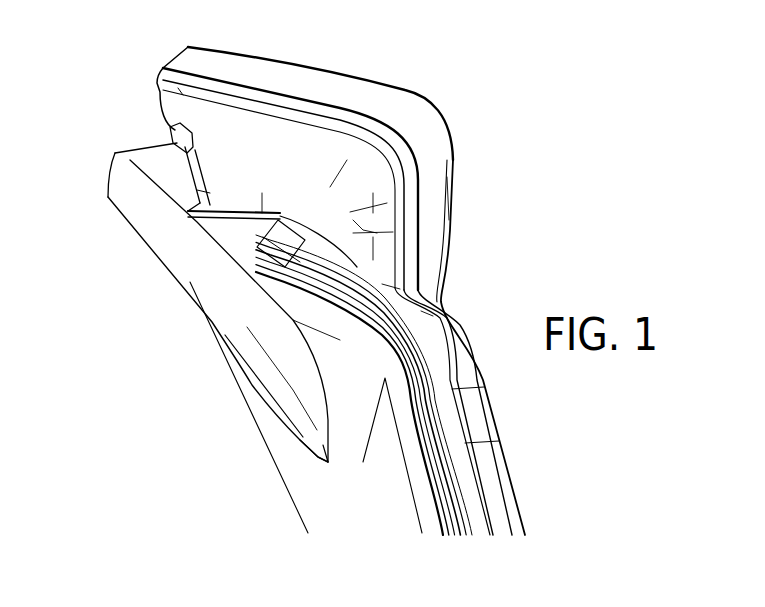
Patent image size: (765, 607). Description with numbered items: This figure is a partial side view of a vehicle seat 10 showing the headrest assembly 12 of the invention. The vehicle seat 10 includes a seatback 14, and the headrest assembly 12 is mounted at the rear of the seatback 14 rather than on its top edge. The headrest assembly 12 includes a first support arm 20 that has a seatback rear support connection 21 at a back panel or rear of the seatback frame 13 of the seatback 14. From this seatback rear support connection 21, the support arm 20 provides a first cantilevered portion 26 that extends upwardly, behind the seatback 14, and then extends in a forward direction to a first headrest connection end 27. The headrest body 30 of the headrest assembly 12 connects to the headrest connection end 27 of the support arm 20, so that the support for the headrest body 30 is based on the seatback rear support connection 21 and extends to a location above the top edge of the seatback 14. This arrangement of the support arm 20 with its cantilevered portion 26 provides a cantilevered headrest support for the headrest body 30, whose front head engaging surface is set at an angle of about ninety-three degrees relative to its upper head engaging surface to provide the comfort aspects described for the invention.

The vehicle seat 10 is at (536, 277).
The headrest assembly 12 is at (135, 46).
The seatback frame 13 is at (367, 505).
The seatback 14 is at (513, 508).
The first support arm 20 is at (197, 330).
The seatback rear support connection 21 is at (309, 454).
The first cantilevered portion 26 is at (135, 195).
The first headrest connection end 27 is at (193, 155).
The headrest body 30 is at (443, 155).